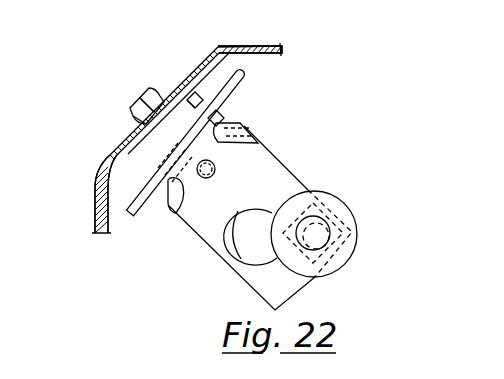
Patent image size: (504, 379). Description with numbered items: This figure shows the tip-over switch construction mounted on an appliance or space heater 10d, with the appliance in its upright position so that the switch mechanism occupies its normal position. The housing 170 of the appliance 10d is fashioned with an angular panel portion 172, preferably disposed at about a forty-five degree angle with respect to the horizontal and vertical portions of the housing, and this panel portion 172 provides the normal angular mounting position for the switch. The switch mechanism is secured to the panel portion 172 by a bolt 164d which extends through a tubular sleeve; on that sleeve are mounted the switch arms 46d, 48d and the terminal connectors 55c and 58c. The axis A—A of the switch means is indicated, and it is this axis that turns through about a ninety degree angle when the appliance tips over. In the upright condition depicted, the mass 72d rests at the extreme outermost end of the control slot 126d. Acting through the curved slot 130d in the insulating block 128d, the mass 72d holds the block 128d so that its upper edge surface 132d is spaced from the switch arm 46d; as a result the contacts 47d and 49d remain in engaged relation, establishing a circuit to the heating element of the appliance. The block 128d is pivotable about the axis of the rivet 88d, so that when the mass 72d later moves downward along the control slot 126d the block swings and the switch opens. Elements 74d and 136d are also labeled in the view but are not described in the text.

The axis A—A of the switch means A is at (93, 54).
The appliance 10d is at (265, 44).
The switch arm 46d is at (218, 116).
The contact 47d is at (134, 127).
The switch arm 48d is at (245, 132).
The contact 49d is at (140, 151).
The terminal connector 55c is at (220, 108).
The terminal connector 58c is at (96, 195).
The mass 72d is at (357, 195).
The axle 74d is at (357, 225).
The rivet 88d is at (215, 169).
The control slot 126d is at (289, 206).
The insulating block 128d is at (190, 260).
The curved slot 130d is at (237, 274).
The upper edge surface 132d is at (192, 82).
The clamp 136d is at (258, 139).
The bolt 164d is at (143, 104).
The housing 170 is at (243, 47).
The angular panel portion 172 is at (98, 160).